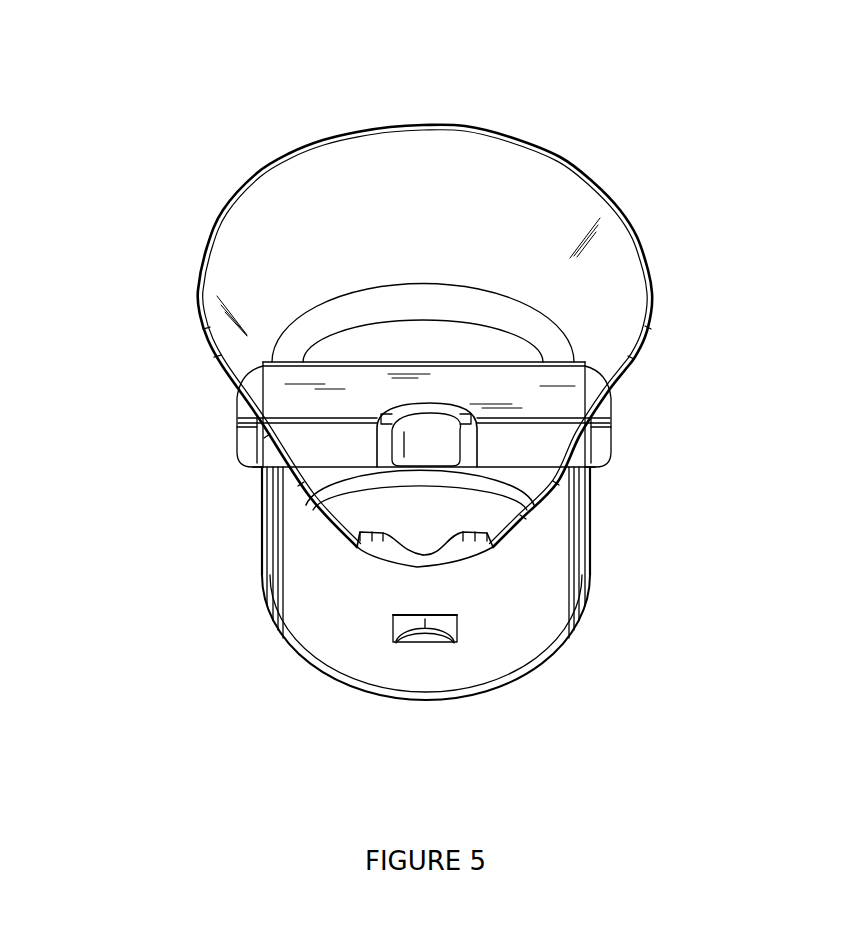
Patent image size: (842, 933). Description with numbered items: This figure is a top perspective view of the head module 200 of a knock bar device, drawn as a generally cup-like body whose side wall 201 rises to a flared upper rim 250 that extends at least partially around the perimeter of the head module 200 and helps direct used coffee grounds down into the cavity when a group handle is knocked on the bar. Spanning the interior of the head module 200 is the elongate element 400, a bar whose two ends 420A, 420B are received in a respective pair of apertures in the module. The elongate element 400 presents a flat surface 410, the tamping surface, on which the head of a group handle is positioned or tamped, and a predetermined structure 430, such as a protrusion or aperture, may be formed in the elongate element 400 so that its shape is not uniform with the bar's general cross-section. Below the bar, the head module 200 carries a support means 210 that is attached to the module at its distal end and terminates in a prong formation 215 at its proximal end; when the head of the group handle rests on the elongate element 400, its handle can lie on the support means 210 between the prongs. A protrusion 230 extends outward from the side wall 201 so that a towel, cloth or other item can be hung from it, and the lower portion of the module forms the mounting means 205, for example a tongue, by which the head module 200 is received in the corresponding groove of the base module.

The head module 200 is at (647, 134).
The flared upper rim 250 is at (252, 234).
The elongate element 400 is at (617, 400).
The flat surface 410 is at (290, 400).
The end of the elongate element 420A is at (243, 437).
The end of the elongate element 420B is at (613, 447).
The predetermined structure 430 is at (345, 500).
The side wall 201 is at (562, 593).
The mounting means (tongue) 205 is at (330, 686).
The support means 210 is at (380, 551).
The prong formation 215 is at (447, 563).
The protrusion 230 is at (433, 637).